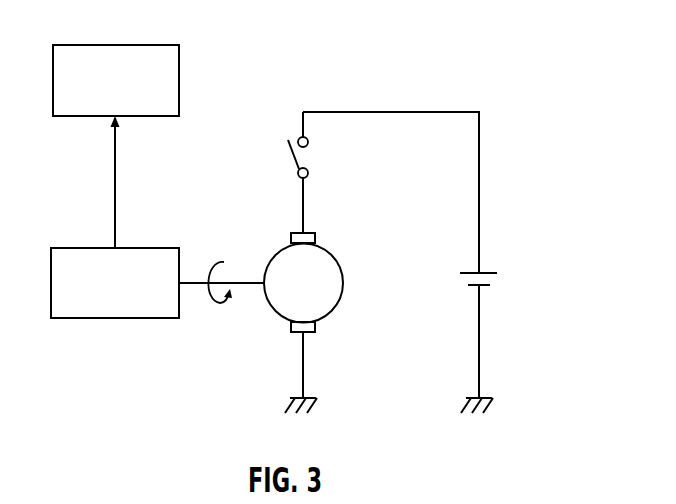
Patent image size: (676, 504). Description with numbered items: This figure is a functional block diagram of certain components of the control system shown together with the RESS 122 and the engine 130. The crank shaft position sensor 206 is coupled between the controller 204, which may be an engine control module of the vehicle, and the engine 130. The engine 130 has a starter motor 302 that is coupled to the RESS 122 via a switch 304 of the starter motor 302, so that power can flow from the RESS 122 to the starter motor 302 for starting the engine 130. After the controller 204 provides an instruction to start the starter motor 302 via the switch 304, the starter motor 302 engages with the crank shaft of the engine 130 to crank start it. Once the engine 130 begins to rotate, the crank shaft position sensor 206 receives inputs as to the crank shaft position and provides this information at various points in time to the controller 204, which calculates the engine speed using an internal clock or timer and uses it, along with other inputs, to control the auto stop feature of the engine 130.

The RESS 122 is at (497, 262).
The engine 130 is at (268, 316).
The controller 204 is at (137, 45).
The crank shaft position sensor 206 is at (137, 248).
The starter motor 302 is at (317, 255).
The switch 304 is at (292, 134).